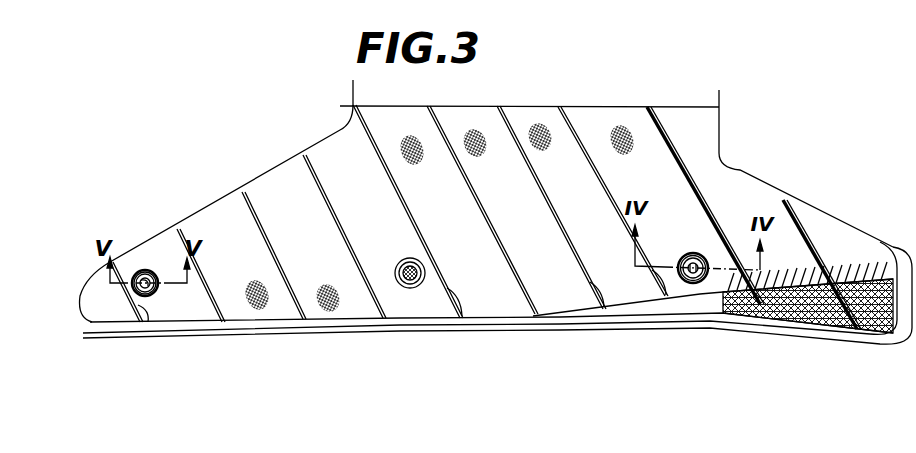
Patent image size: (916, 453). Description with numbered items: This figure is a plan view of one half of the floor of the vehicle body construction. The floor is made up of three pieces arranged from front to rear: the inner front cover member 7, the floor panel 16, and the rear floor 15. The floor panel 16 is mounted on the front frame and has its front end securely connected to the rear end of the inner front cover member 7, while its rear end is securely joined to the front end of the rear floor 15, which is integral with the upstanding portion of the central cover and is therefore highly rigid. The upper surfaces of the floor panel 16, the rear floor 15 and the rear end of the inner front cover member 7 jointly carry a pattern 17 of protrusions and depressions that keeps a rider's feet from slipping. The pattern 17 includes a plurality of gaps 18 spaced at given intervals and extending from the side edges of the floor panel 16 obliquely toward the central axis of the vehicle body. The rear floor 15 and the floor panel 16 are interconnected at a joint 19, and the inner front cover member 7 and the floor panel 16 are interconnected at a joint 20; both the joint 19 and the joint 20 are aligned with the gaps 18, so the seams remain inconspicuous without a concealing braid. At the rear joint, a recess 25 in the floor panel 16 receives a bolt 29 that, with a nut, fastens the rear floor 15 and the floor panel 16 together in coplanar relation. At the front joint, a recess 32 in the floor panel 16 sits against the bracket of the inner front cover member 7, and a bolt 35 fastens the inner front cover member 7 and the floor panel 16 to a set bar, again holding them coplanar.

The inner front cover member 7 is at (108, 322).
The rear floor 15 is at (836, 237).
The floor panel 16 is at (590, 128).
The pattern of protrusions and depressions 17 is at (806, 312).
The gaps 18 is at (462, 320).
The joint 19 is at (717, 217).
The joint 20 is at (142, 315).
The recess 25 is at (703, 282).
The bolt 29 is at (684, 282).
The recess 32 is at (151, 270).
The bolt 35 is at (157, 293).